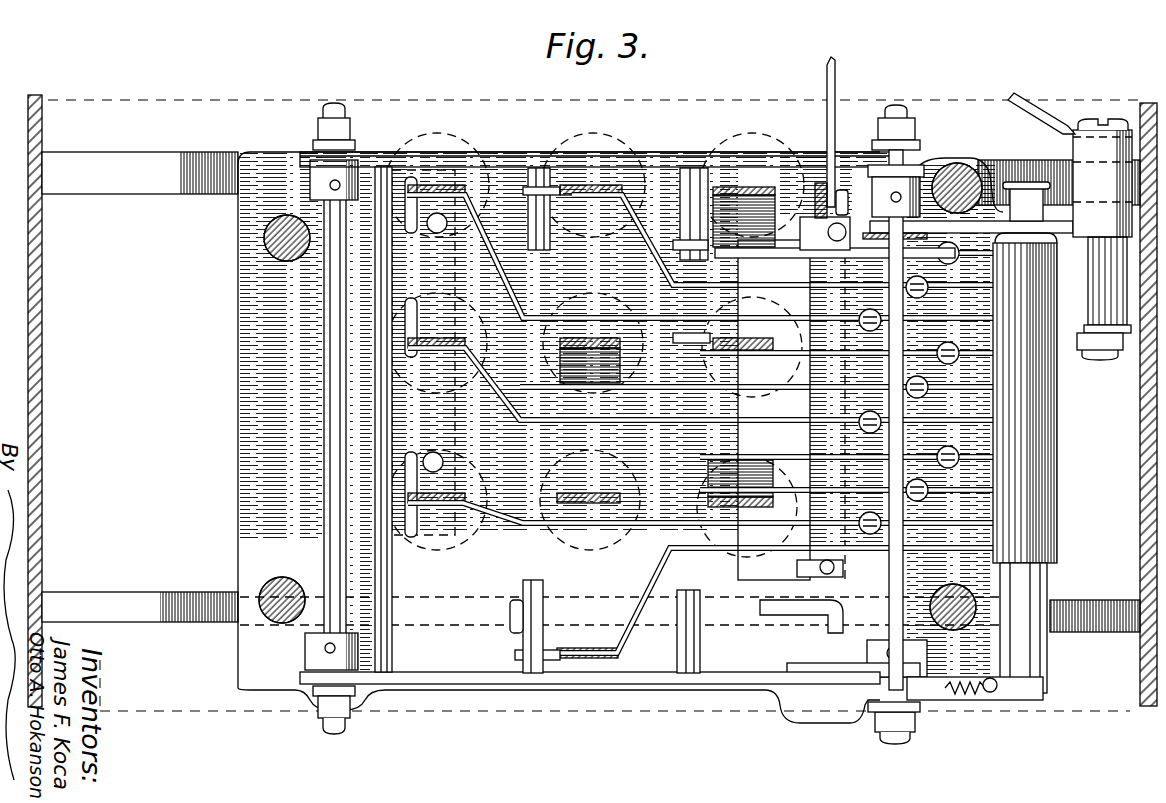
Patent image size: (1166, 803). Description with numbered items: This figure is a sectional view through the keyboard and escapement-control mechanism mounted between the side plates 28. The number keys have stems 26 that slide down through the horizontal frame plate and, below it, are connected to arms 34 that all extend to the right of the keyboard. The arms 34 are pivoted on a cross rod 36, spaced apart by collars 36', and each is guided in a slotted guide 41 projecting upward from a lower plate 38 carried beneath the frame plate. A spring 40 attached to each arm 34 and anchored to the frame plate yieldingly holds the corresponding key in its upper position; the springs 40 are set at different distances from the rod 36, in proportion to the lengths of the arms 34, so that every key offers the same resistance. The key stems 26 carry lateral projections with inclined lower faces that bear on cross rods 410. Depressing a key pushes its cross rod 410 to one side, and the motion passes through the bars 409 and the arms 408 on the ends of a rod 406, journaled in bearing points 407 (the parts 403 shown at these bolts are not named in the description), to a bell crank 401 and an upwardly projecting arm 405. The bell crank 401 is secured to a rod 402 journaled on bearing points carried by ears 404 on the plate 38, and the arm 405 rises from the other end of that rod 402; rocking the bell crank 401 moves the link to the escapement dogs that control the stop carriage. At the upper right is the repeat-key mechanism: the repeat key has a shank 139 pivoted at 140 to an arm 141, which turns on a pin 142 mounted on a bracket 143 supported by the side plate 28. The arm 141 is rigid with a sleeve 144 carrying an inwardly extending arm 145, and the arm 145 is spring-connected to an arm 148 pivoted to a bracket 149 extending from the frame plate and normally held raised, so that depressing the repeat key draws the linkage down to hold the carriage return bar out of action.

The key stem 26 is at (597, 482).
The side plate 28 is at (1140, 436).
The arm 34 is at (657, 425).
The cross rod 36 is at (1046, 628).
The collar 36' is at (1049, 398).
The plate 38 is at (240, 468).
The spring 40 is at (940, 375).
The slotted guide 41 is at (792, 440).
The bracket 149 is at (818, 182).
The shank portion 139 is at (880, 160).
The pivot 140 is at (835, 250).
The arm 141 is at (978, 232).
The pin 142 is at (1096, 296).
The bracket 143 is at (1100, 352).
The sleeve portion 144 is at (1098, 170).
The arm 145 is at (1032, 105).
The arm 148 is at (826, 81).
The bell crank 401 is at (915, 688).
The rod 402 is at (880, 598).
The bolt block 403 is at (915, 152).
The ear 404 is at (882, 714).
The arm 405 is at (945, 165).
The rod 406 is at (325, 404).
The bearing point 407 is at (345, 152).
The arm 408 is at (308, 180).
The bar 409 is at (512, 160).
The cross rod 410 is at (392, 592).